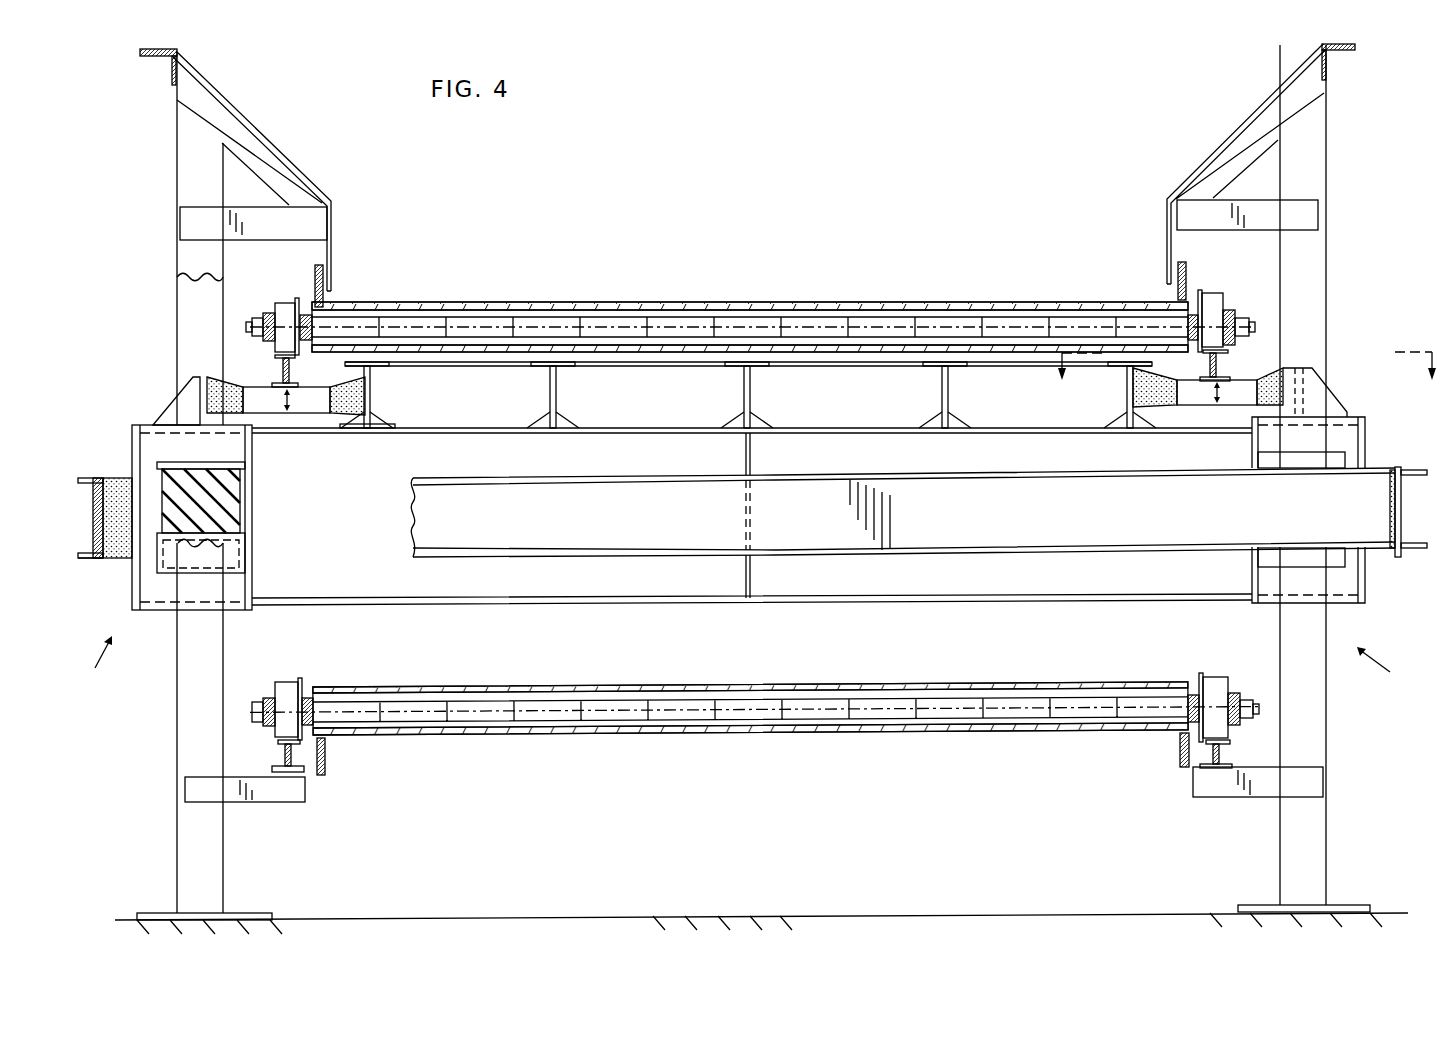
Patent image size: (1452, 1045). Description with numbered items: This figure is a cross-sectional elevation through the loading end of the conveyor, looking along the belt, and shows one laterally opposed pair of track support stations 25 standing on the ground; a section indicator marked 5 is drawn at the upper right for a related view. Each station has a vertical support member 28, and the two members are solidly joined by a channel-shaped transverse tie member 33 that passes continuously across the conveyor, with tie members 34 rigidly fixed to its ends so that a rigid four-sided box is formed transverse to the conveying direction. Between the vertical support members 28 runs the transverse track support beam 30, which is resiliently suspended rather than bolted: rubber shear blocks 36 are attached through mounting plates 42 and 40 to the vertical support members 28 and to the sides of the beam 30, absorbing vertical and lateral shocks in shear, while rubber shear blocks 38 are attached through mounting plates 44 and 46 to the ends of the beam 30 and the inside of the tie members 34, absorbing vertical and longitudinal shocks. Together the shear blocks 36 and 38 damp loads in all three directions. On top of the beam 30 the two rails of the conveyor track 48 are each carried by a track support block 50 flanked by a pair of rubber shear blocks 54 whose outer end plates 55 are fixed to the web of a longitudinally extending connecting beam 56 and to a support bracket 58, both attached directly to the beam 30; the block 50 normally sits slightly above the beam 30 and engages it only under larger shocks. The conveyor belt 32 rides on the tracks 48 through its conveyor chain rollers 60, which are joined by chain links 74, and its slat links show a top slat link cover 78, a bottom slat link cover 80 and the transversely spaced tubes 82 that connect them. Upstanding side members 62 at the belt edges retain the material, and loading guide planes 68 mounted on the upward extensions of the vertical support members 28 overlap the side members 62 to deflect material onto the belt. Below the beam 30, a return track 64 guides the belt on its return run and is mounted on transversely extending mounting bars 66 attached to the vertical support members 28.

The section line 5- 5 is at (1247, 387).
The track support station 25 is at (737, 665).
The vertical support member 28 is at (188, 712).
The transverse track support beam 30 is at (352, 592).
The conveyor belt 32 is at (692, 300).
The transverse tie member 33 is at (560, 540).
The tie member 34 is at (90, 520).
The rubber shear block 36 is at (235, 500).
The rubber shear block 38 is at (118, 558).
The mounting plate 40 is at (245, 455).
The mounting plate 42 is at (246, 570).
The mounting plate 44 is at (133, 452).
The mounting plate 46 is at (110, 480).
The conveyor track 48 is at (280, 372).
The track support block 50 is at (302, 413).
The rubber shear block 54 is at (215, 378).
The end plate 55 is at (356, 428).
The connecting beam 56 is at (370, 422).
The support bracket 58 is at (175, 410).
The conveyor chain roller 60 is at (285, 303).
The side member 62 is at (323, 292).
The return track 64 is at (283, 760).
The mounting bar 66 is at (278, 797).
The loading guide plane 68 is at (330, 190).
The chain link 74 is at (268, 312).
The top slat link cover 78 is at (902, 302).
The bottom slat link cover 80 is at (833, 354).
The tube 82 is at (813, 318).